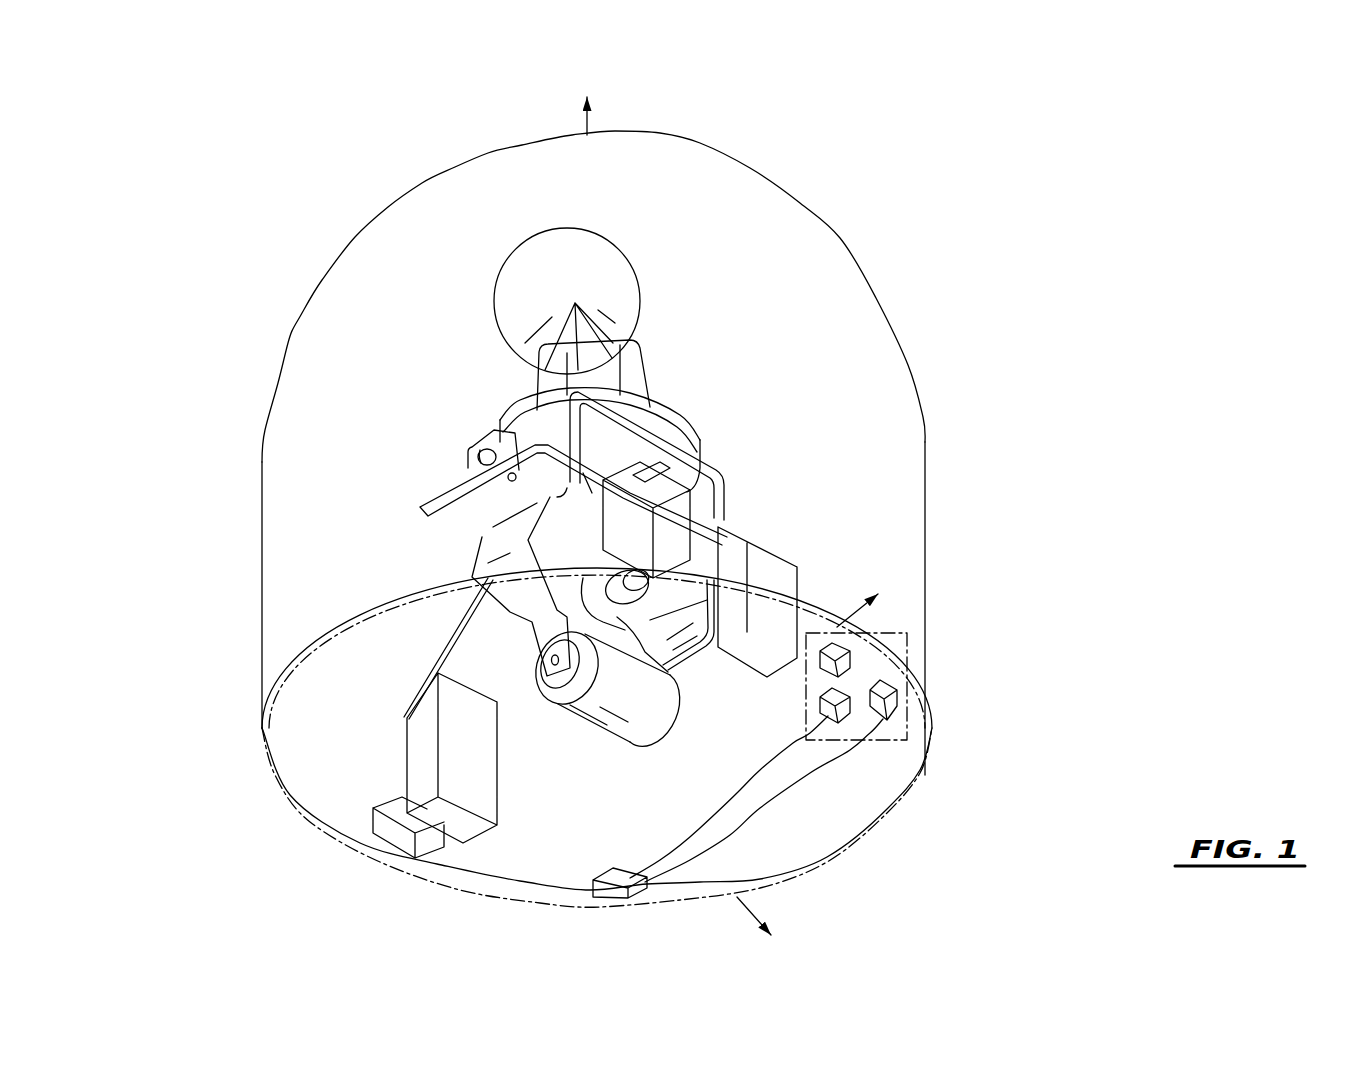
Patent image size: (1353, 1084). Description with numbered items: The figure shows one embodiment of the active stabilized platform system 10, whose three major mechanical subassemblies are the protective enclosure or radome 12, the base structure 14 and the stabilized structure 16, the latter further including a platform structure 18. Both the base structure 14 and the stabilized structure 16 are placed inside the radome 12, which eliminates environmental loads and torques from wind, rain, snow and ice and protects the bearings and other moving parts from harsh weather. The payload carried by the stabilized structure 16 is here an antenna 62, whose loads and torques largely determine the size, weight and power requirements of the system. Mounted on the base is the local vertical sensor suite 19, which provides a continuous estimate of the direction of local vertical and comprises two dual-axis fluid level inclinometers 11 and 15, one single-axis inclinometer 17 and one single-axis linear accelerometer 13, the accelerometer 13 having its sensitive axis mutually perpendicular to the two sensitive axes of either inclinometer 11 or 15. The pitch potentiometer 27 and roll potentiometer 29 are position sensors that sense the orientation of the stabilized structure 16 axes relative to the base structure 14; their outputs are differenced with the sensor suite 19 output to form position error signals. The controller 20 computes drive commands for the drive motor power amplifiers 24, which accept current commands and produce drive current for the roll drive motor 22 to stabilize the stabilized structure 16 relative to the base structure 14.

The active stabilized platform system 10 is at (978, 297).
The dual-axis fluid level inclinometer 11 is at (850, 660).
The radome 12 is at (810, 208).
The single-axis linear accelerometer 13 is at (1030, 647).
The base structure 14 is at (803, 570).
The dual-axis fluid level inclinometer 15 is at (888, 710).
The stabilized structure 16 is at (700, 412).
The single-axis fluid level inclinometer 17 is at (843, 723).
The platform structure 18 is at (733, 470).
The local vertical sensor suite 19 is at (870, 632).
The controller 20 is at (611, 896).
The drive motor 22 is at (624, 616).
The drive motor power amplifiers 24 is at (390, 850).
The pitch potentiometer 27 is at (472, 446).
The roll potentiometer 29 is at (690, 487).
The antenna 62 is at (660, 298).